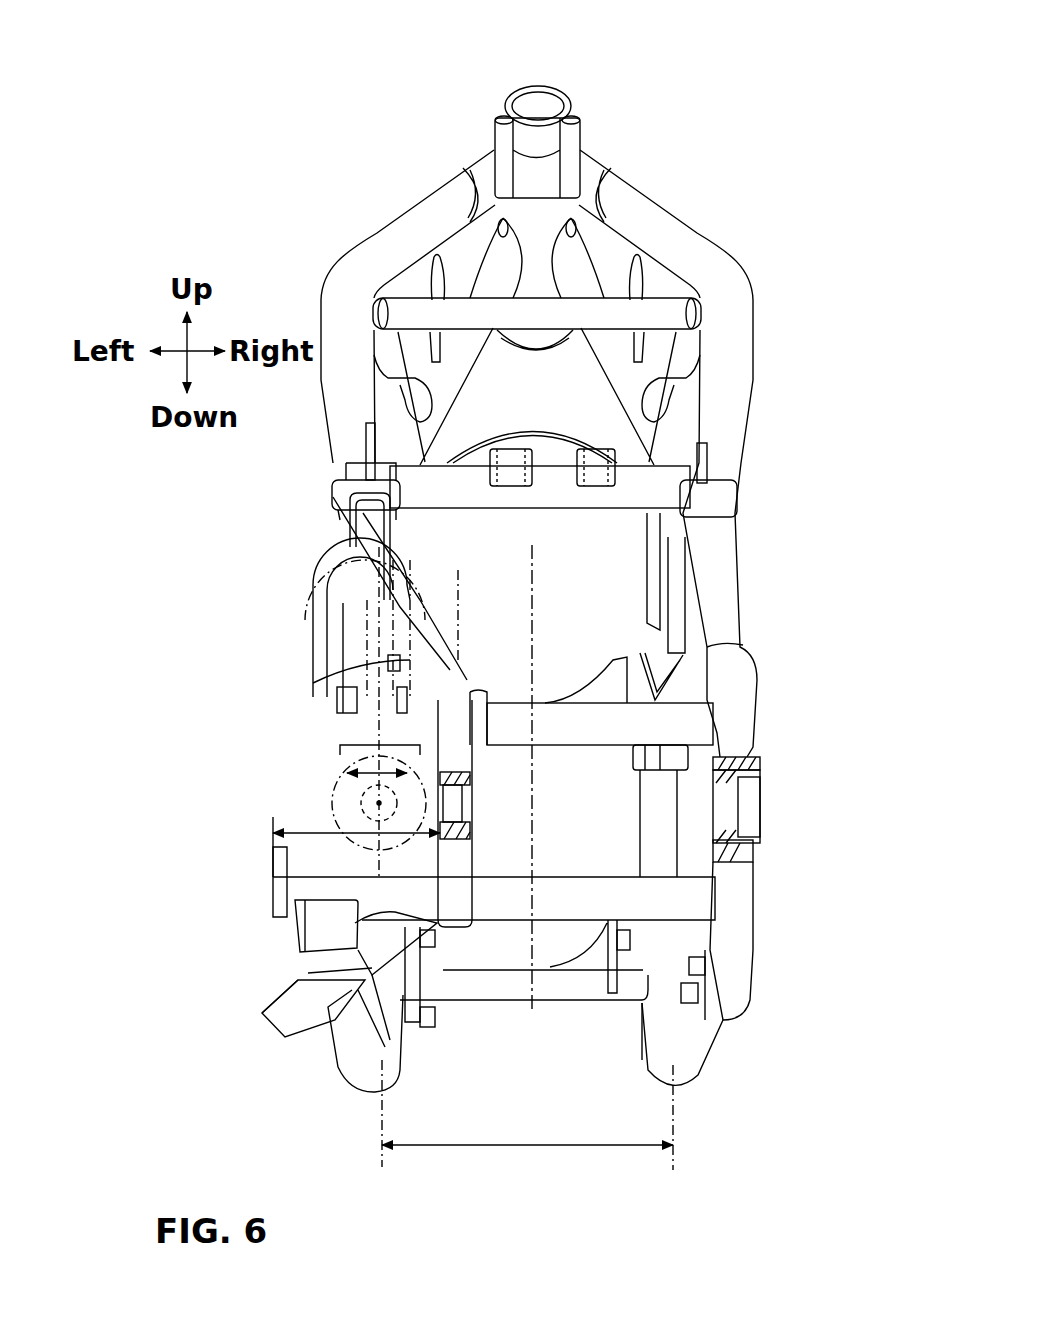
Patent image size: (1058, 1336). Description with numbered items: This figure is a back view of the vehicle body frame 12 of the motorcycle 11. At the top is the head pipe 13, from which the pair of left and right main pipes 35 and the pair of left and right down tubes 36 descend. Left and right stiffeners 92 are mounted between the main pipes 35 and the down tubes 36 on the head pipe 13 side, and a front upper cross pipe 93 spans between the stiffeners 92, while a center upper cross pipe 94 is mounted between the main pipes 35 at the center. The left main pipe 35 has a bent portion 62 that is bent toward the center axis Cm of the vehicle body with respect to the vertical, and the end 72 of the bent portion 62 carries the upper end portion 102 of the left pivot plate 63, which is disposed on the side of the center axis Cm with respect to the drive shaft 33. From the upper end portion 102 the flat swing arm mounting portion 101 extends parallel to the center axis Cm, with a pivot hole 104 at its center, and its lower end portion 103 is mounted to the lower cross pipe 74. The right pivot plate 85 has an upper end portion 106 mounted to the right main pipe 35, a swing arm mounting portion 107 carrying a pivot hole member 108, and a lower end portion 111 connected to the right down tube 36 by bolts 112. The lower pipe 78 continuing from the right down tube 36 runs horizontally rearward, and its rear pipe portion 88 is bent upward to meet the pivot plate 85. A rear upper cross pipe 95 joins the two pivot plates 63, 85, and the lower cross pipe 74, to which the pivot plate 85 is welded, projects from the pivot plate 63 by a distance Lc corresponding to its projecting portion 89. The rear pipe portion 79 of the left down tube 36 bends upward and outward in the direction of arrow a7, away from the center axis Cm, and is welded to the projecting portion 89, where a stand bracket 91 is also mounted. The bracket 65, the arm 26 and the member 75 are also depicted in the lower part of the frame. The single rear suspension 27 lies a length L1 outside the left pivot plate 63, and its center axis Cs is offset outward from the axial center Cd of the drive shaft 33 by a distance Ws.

The motorcycle 11 is at (295, 130).
The vehicle body frame 12 is at (365, 145).
The head pipe 13 is at (520, 88).
The main pipe 35 is at (360, 220).
The down tube 36 is at (493, 283).
The stiffener 92 is at (415, 364).
The front upper cross pipe 93 is at (538, 355).
The center upper cross pipe 94 is at (510, 508).
The bracket 65 is at (340, 496).
The rear suspension 27 is at (305, 567).
The center axis of the vehicle body Cm is at (535, 568).
The bent portion 62 is at (360, 595).
The end of the bent portion 72 is at (397, 627).
The upper end portion 102 is at (377, 653).
The pivot plate 63 is at (393, 700).
The rear upper cross pipe 95 is at (545, 703).
The upper end portion 106 is at (735, 660).
The pivot plate 85 is at (757, 705).
The center axis of the rear suspension Cs is at (377, 760).
The swing arm 26 is at (338, 763).
The distance Ws is at (343, 765).
The drive shaft 33 is at (353, 793).
The axial center of the drive shaft Cd is at (379, 803).
The distance Lc is at (356, 842).
The swing arm mounting portion 107 is at (758, 752).
The pivot hole member 108 is at (762, 787).
The pivot hole 104 is at (465, 805).
The lower cross pipe 74 is at (577, 877).
The swing arm mounting portion 101 is at (472, 857).
The projecting portion 89 is at (355, 942).
The stand bracket 91 is at (262, 993).
The lower end portion 103 is at (483, 893).
The pivot plate 75 is at (470, 910).
The rear pipe portion 79 is at (330, 1040).
The arrow a7 is at (347, 1098).
The lower pipe 78 is at (695, 1090).
The lower end portion 111 is at (735, 953).
The bolt 112 is at (677, 1003).
The rear pipe portion 88 is at (717, 1035).
The length L1 is at (527, 1130).